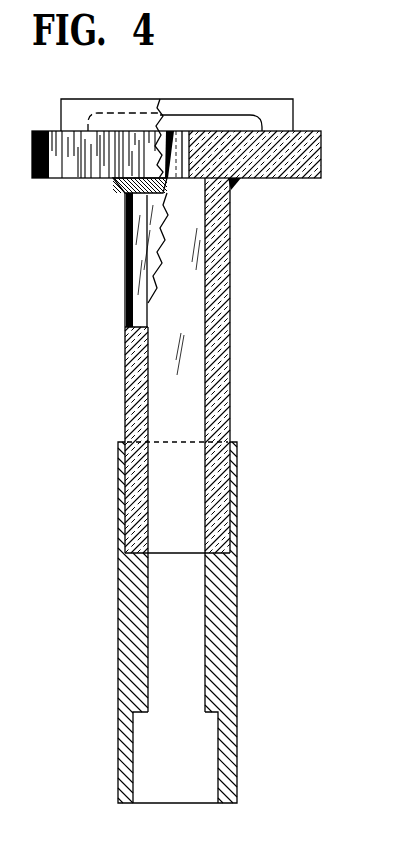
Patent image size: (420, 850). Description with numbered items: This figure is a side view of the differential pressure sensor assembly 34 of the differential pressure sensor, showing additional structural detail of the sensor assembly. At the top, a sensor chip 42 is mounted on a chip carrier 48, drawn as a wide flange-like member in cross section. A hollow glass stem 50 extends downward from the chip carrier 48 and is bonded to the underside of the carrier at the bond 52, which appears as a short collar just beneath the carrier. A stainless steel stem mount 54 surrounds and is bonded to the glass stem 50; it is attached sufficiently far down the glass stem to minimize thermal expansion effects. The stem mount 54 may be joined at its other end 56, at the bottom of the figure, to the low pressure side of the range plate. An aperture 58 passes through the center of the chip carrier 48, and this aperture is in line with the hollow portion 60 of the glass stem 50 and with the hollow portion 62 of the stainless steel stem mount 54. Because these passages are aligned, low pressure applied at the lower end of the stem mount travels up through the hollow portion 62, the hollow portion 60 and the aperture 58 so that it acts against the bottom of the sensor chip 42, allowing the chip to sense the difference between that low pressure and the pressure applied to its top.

The stem assembly 34 is at (47, 435).
The sensor chip 42 is at (230, 105).
The chip carrier 48 is at (312, 152).
The hollow glass stem 50 is at (220, 385).
The bond 52 is at (117, 181).
The stainless steel stem mount 54 is at (128, 593).
The other end of stem mount 56 is at (228, 796).
The aperture 58 is at (178, 176).
The hollow portion of the glass stem 60 is at (197, 325).
The hollow portion of the stainless steel stem mount 62 is at (187, 635).